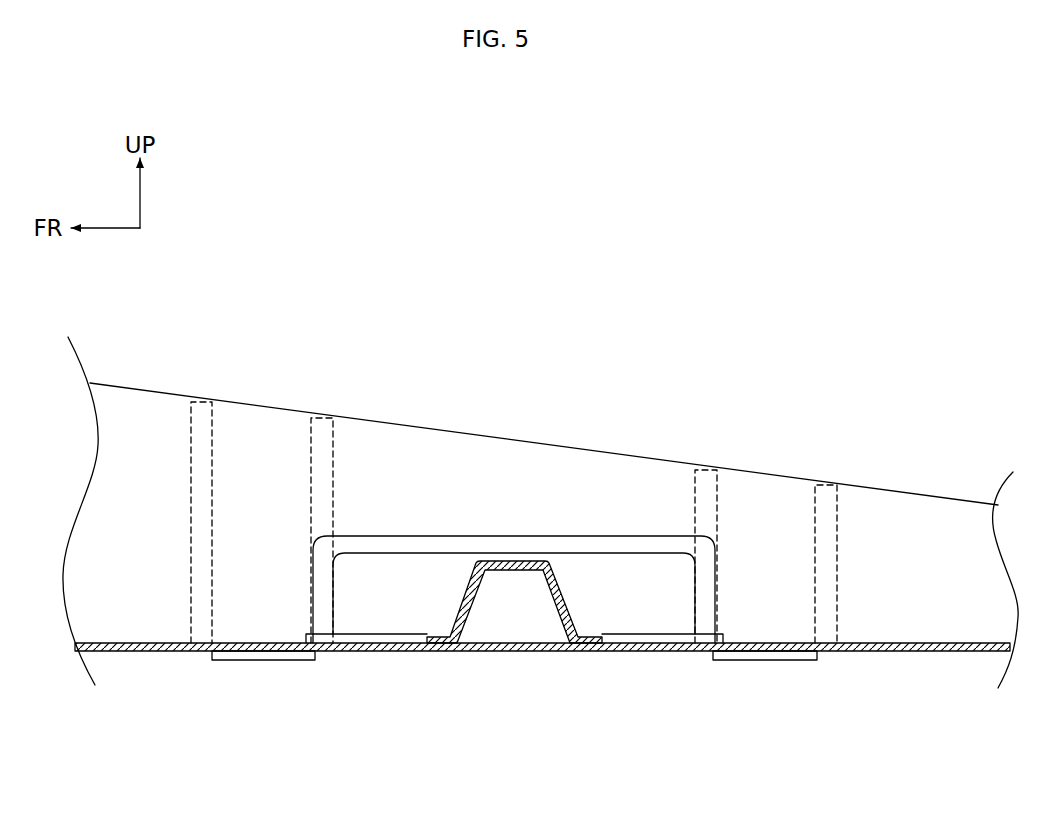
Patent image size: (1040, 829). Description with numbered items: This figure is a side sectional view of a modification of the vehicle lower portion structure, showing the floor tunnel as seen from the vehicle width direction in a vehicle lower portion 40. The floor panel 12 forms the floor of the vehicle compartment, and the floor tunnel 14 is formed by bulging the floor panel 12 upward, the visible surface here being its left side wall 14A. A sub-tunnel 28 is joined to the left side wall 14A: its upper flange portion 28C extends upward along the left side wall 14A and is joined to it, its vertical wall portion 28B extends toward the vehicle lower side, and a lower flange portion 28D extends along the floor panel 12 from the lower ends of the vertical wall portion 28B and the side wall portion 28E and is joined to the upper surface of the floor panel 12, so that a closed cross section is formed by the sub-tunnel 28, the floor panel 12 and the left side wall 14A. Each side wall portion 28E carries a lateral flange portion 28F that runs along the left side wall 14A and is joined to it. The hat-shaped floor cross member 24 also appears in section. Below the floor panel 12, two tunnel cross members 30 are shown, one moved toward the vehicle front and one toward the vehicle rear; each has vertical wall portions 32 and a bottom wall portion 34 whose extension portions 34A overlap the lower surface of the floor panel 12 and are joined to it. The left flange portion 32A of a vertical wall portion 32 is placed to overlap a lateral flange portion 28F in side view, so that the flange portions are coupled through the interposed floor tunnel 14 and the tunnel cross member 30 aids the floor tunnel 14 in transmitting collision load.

The floor panel 12 is at (888, 654).
The floor tunnel 14 is at (415, 422).
The left side wall 14A is at (145, 583).
The floor cross member 24 is at (456, 596).
The sub-tunnel 28 is at (505, 552).
The vertical wall portion 28B is at (638, 617).
The upper flange portion 28C is at (512, 536).
The lower flange portion 28D is at (410, 634).
The side wall portion 28E is at (332, 611).
The lateral flange portion 28F is at (320, 568).
The tunnel cross member 30 is at (202, 382).
The vertical wall portion 32 is at (215, 421).
The left flange portion 32A is at (197, 512).
The bottom wall portion 34 is at (537, 690).
The extension portion 34A is at (230, 663).
The vehicle lower portion 40 is at (538, 291).